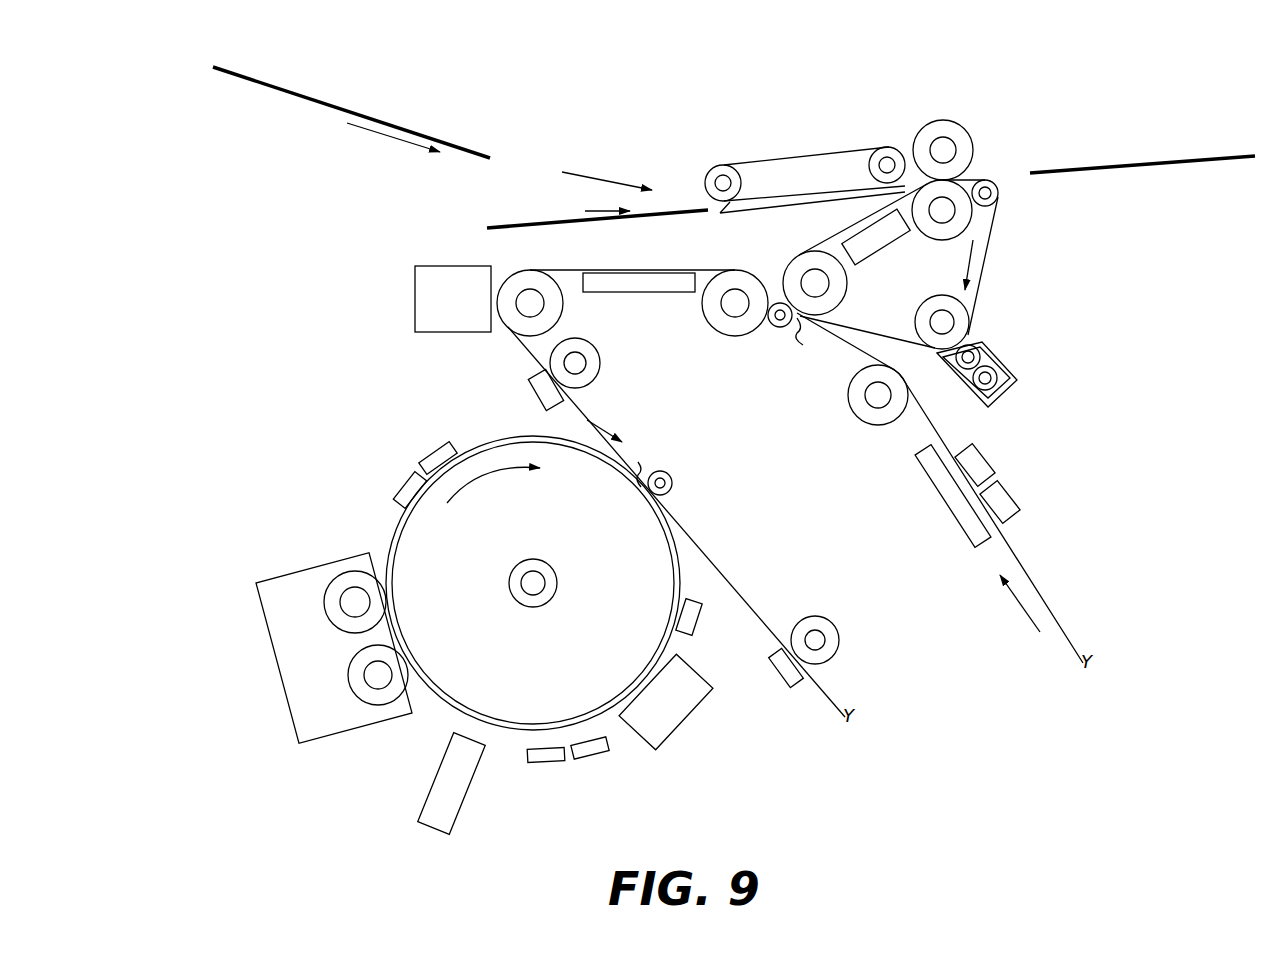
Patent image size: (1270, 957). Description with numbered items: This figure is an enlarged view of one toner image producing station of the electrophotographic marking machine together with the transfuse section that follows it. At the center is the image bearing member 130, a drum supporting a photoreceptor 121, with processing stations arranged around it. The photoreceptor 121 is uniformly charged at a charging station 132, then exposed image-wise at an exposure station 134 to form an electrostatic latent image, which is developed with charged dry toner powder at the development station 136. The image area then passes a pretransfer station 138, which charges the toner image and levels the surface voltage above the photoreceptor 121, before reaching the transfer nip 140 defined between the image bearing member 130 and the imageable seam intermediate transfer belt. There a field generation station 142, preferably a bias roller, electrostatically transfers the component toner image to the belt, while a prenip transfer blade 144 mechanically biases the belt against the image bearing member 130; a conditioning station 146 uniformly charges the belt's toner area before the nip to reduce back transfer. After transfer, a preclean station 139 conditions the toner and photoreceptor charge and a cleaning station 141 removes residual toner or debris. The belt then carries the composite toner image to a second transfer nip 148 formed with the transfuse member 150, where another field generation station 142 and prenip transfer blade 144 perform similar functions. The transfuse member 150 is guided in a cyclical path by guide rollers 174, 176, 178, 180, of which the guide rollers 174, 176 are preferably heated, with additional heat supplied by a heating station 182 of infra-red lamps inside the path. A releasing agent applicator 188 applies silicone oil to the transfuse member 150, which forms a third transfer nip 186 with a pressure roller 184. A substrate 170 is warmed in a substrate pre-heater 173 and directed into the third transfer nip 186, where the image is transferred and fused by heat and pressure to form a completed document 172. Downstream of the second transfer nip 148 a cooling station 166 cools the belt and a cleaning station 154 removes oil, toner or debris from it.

The photoreceptor 121 is at (423, 692).
The image bearing member 130 is at (690, 560).
The charging station 132 is at (573, 767).
The exposure station 134 is at (465, 785).
The development station 136 is at (307, 577).
The pretransfer station 138 is at (413, 463).
The preclean station 139 is at (690, 623).
The transfer nip 140 is at (675, 503).
The cleaning station 141 is at (673, 713).
The field generation station 142 is at (672, 483).
The prenip transfer blade 144 is at (740, 402).
The conditioning station 146 is at (540, 393).
The second transfer nip 148 is at (778, 290).
The transfuse member 150 is at (992, 248).
The cleaning station 154 is at (447, 261).
The cooling station 166 is at (630, 285).
The substrate 170 is at (457, 149).
The completed document 172 is at (1212, 157).
The substrate pre-heater 173 is at (758, 148).
The guide roller 174 is at (800, 267).
The guide roller 176 is at (928, 233).
The guide roller 178 is at (998, 202).
The guide roller 180 is at (923, 312).
The heating station 182 is at (887, 227).
The pressure roller 184 is at (937, 125).
The third transfer nip 186 is at (977, 167).
The releasing agent applicator 188 is at (1012, 380).